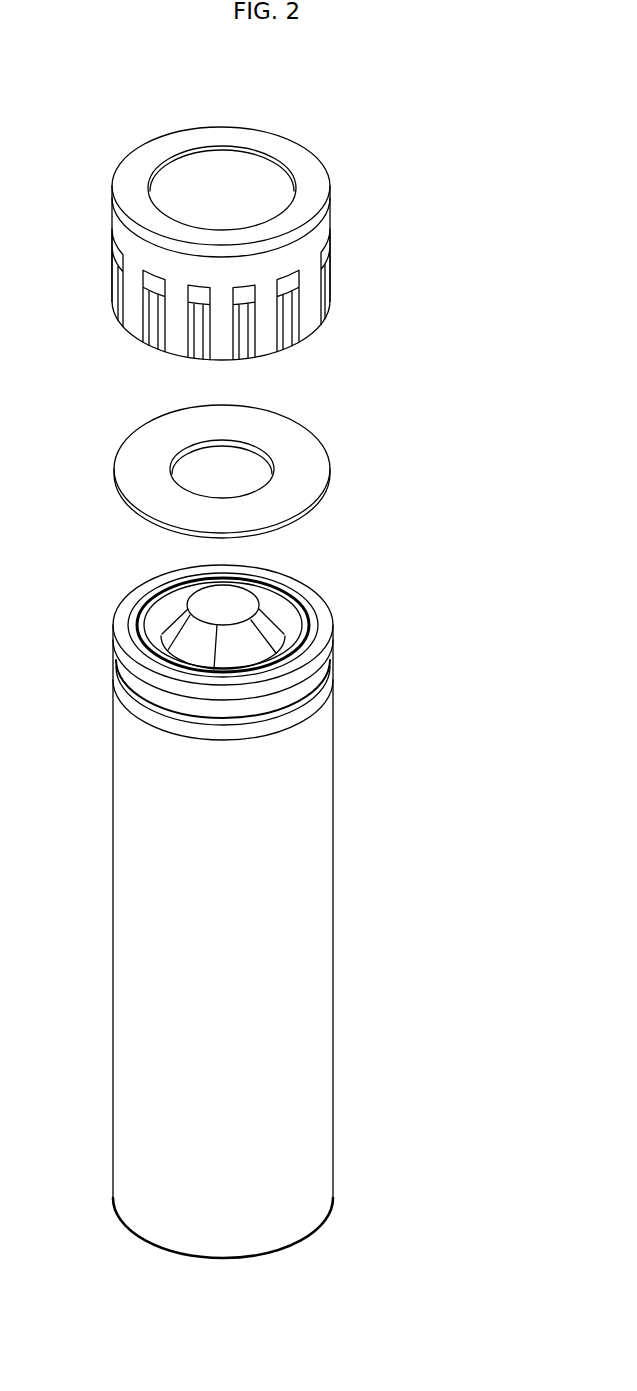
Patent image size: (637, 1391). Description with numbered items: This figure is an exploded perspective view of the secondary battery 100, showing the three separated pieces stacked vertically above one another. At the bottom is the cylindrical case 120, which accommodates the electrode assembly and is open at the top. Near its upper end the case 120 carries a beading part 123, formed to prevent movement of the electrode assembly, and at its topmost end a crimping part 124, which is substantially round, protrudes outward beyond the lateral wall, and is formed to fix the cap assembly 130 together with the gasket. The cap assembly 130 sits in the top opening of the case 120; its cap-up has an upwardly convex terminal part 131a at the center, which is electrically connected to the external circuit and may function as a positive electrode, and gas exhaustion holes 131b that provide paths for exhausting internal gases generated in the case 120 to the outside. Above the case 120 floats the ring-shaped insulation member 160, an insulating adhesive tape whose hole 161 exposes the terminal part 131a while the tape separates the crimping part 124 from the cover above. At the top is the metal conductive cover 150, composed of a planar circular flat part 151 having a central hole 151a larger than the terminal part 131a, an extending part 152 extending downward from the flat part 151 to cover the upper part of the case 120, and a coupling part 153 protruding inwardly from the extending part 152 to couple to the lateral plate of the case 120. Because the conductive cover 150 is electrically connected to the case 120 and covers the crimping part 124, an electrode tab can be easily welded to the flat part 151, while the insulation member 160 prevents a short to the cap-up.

The secondary battery 100 is at (88, 96).
The case 120 is at (336, 836).
The beading part 123 is at (318, 690).
The crimping part 124 is at (317, 632).
The cap assembly 130 is at (163, 622).
The terminal part 131a is at (237, 603).
The gas exhaustion holes 131b is at (243, 646).
The conductive cover 150 is at (428, 144).
The flat part 151 is at (313, 190).
The central hole 151a is at (249, 189).
The extending part 152 is at (320, 236).
The coupling part 153 is at (287, 312).
The insulation member 160 is at (317, 470).
The hole 161 is at (243, 469).